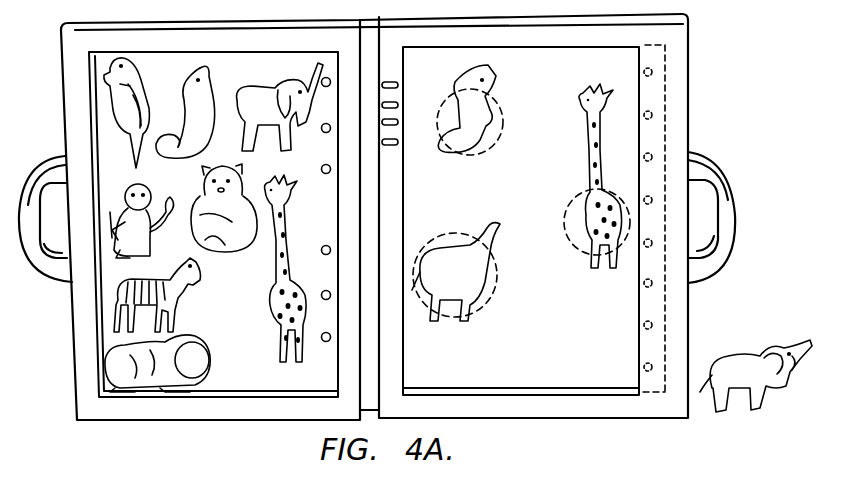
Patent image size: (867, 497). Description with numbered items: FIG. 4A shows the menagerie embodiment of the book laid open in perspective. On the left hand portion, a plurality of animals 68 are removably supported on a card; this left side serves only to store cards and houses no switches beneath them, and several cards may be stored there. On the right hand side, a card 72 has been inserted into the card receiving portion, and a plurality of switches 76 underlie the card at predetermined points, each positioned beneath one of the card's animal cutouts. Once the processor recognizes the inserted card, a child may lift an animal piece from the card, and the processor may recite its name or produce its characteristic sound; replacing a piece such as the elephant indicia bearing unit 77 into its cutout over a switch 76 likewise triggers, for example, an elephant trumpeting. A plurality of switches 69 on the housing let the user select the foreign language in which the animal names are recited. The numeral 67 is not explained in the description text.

The left panel board 67 is at (110, 322).
The animals 68 is at (118, 190).
The switches 69 is at (390, 80).
The card 72 is at (565, 374).
The switches 76 is at (500, 105).
The elephant indicia bearing unit 77 is at (733, 355).